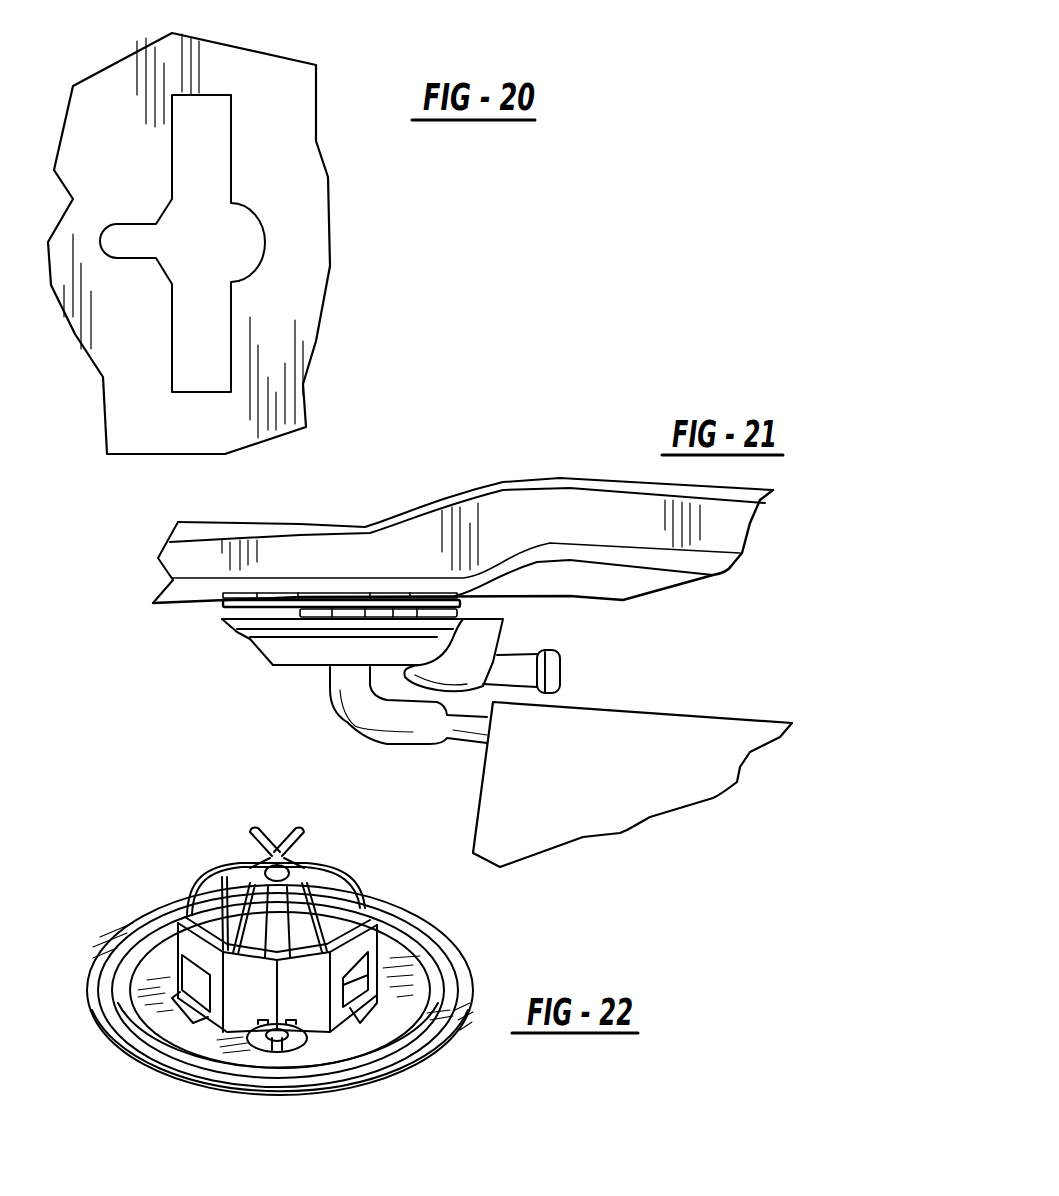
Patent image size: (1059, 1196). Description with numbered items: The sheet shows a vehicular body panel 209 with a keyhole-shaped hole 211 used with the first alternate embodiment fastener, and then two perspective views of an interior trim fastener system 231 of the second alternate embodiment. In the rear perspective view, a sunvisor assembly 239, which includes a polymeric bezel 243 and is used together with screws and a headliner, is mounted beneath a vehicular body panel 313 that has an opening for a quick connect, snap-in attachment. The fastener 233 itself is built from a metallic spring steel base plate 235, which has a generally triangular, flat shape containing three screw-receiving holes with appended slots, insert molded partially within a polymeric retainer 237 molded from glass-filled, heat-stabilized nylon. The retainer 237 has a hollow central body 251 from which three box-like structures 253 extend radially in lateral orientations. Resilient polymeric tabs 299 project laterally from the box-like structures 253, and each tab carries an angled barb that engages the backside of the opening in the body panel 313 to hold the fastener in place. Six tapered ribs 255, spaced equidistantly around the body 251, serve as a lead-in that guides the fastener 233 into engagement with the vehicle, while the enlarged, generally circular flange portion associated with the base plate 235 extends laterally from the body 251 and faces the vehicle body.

In FIG. 20, the vehicular body panel 209 is at (112, 87).
In FIG. 20, the hole 211 is at (232, 152).
In FIG. 21, the interior trim fastener system 231 is at (183, 652).
In FIG. 21, the polymeric bezel 243 is at (293, 643).
In FIG. 21, the vehicular body panel 313 is at (588, 585).
In FIG. 21, the sunvisor assembly 239 is at (628, 788).
In FIG. 22, the fastener 233 is at (78, 935).
In FIG. 22, the metallic spring steel base plate 235 is at (257, 1042).
In FIG. 22, the polymeric retainer 237 is at (372, 948).
In FIG. 22, the hollow central body 251 is at (287, 900).
In FIG. 22, the box-like structures 253 is at (180, 950).
In FIG. 22, the tapered ribs 255 is at (253, 850).
In FIG. 22, the resilient polymeric tabs 299 is at (367, 982).